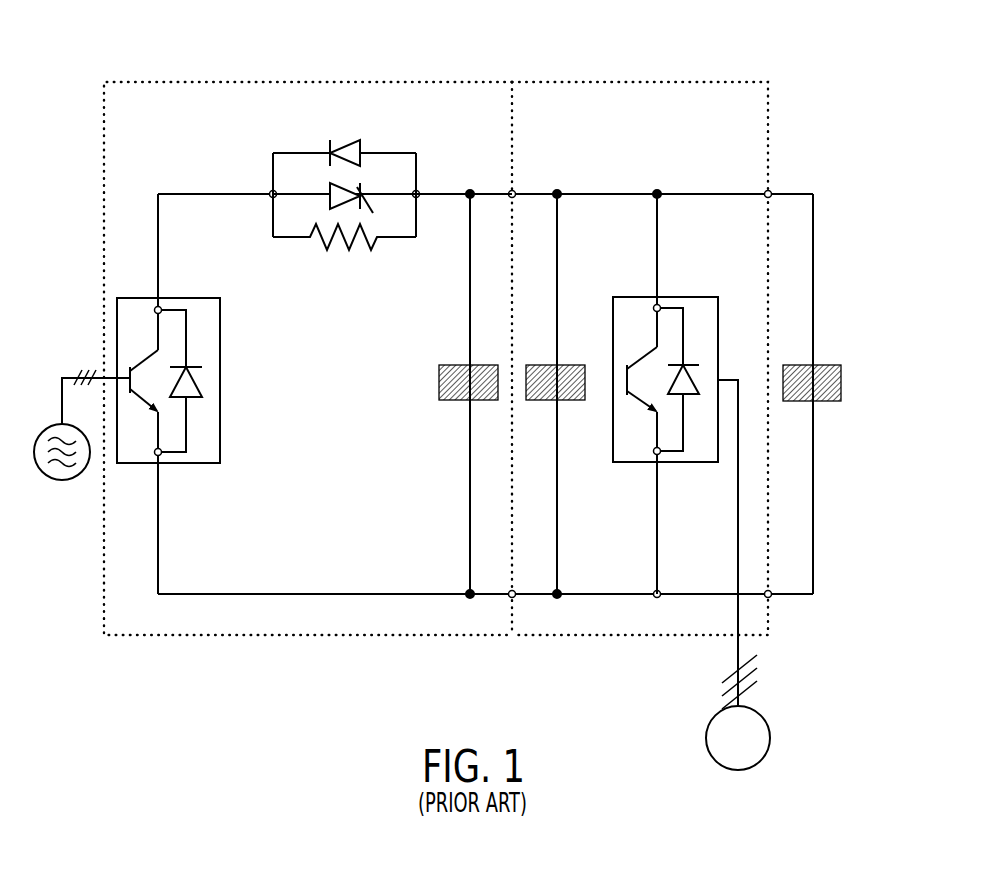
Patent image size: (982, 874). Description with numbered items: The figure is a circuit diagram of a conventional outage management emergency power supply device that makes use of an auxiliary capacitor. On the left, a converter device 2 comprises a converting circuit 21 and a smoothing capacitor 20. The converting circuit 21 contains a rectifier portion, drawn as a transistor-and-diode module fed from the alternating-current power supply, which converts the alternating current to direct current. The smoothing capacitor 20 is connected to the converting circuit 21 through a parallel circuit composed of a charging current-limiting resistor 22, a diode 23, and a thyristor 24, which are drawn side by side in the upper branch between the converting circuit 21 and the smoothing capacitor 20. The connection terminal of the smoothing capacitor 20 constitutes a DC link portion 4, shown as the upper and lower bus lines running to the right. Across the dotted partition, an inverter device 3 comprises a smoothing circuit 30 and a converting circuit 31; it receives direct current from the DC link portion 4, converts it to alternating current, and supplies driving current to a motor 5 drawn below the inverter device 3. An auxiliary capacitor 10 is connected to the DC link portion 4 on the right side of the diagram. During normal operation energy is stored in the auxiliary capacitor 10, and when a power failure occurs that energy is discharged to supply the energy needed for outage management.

The converter device 2 is at (357, 621).
The inverter device 3 is at (612, 621).
The DC link portion 4 is at (474, 190).
The motor 5 is at (765, 727).
The auxiliary capacitor 10 is at (827, 366).
The smoothing capacitor 20 is at (453, 360).
The converting circuit 21 is at (222, 377).
The charging current-limiting resistor 22 is at (310, 228).
The diode 23 is at (347, 124).
The thyristor 24 is at (385, 166).
The smoothing circuit 30 is at (555, 360).
The converting circuit 31 is at (670, 297).